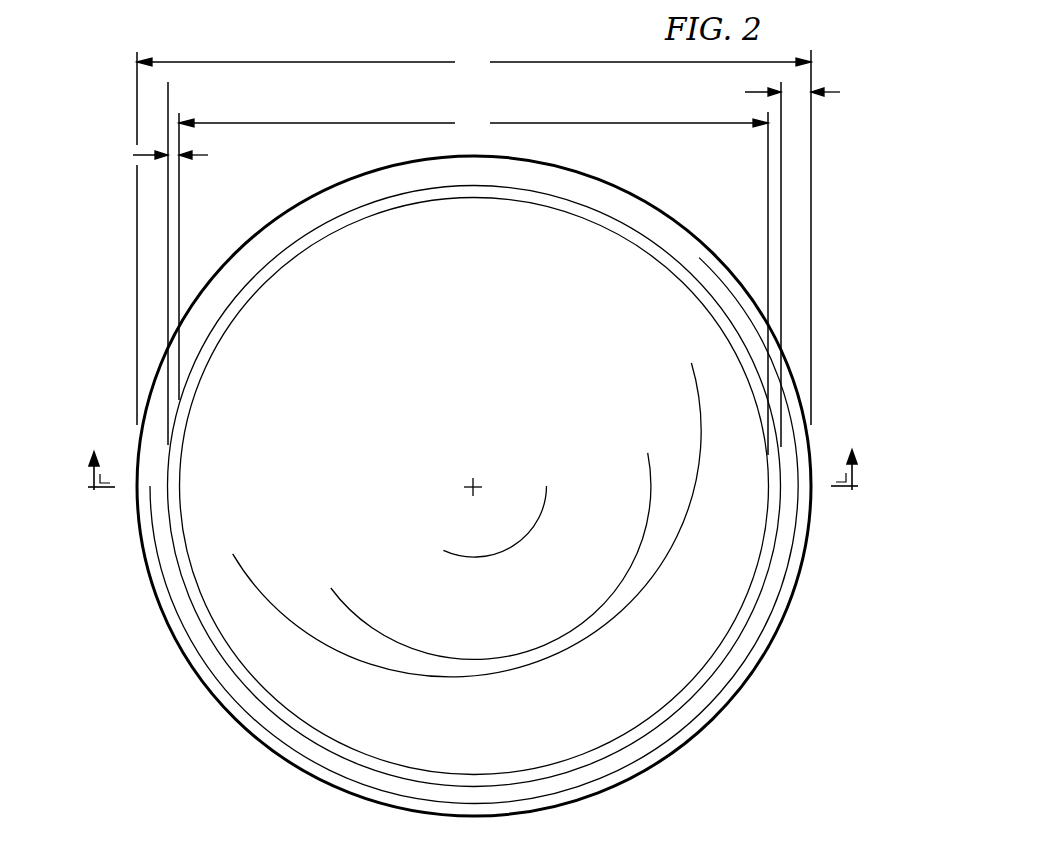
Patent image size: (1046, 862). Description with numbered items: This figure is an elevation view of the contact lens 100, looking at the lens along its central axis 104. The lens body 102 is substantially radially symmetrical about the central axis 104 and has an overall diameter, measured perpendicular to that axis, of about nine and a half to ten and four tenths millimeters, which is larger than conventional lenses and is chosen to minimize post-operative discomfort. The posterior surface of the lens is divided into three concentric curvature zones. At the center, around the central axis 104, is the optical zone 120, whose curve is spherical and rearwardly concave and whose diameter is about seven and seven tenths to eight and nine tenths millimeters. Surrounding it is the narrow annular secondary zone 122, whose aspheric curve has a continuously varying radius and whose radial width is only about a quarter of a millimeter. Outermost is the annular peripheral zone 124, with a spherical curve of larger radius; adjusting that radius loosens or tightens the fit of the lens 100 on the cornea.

The contact lens 100 is at (831, 347).
The lens body 102 is at (151, 597).
The central axis 104 is at (469, 484).
The optical zone 120 is at (492, 385).
The secondary zone 122 is at (470, 188).
The peripheral zone 124 is at (653, 215).